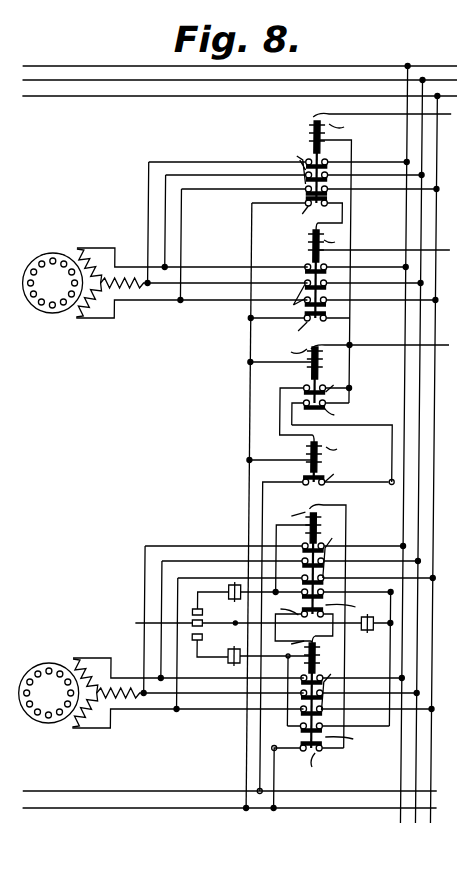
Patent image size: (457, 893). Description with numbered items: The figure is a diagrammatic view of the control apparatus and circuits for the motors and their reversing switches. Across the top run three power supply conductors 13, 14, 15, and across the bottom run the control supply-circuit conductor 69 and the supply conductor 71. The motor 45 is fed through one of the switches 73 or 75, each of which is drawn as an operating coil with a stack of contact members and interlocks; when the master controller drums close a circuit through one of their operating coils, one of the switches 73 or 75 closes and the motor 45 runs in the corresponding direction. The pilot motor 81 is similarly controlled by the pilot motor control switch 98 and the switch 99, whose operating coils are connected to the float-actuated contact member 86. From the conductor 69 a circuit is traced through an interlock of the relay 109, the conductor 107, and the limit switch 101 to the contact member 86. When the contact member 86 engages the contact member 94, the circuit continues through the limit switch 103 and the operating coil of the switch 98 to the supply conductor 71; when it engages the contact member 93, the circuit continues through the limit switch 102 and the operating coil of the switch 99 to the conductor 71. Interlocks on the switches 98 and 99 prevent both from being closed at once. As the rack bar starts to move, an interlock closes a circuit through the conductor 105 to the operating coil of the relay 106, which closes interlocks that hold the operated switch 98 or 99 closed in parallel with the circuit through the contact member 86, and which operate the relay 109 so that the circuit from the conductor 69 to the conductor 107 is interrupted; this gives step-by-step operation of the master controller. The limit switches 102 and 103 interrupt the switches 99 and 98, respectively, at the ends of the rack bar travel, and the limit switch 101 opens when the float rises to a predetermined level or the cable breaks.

The supply conductor 13 is at (108, 66).
The supply conductor 14 is at (107, 80).
The supply conductor 15 is at (152, 96).
The motor 45 is at (60, 247).
The pilot motor 81 is at (56, 655).
The switch 73 is at (294, 136).
The switch 75 is at (294, 255).
The conductor 105 is at (398, 345).
The relay 106 is at (303, 388).
The conductor 107 is at (392, 485).
The relay 109 is at (299, 454).
The pilot motor control switch 98 is at (376, 532).
The switch 99 is at (375, 670).
The contact member 86 is at (235, 623).
The contact member 93 is at (205, 637).
The contact member 94 is at (205, 612).
The limit switch 101 is at (368, 631).
The limit switch 102 is at (230, 659).
The limit switch 103 is at (232, 586).
The control supply-circuit conductor 69 is at (188, 791).
The supply conductor 71 is at (127, 808).